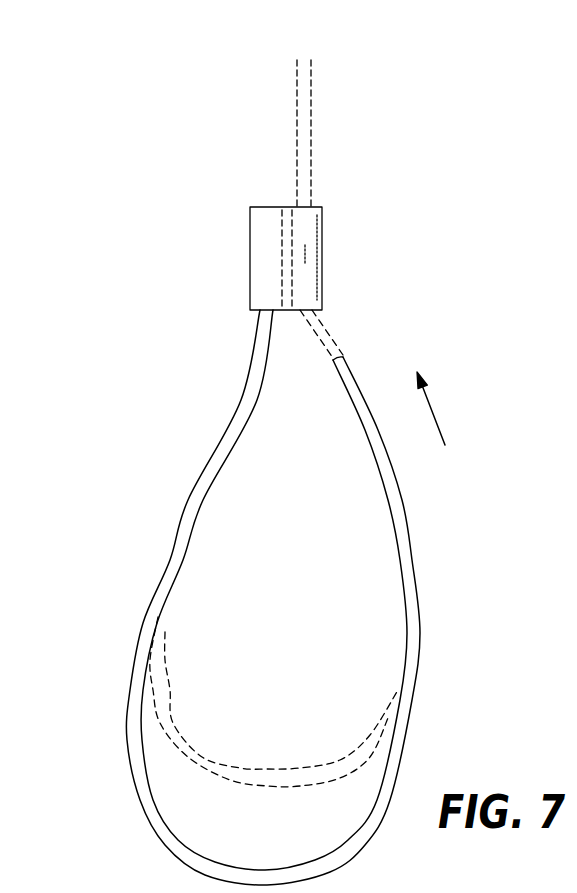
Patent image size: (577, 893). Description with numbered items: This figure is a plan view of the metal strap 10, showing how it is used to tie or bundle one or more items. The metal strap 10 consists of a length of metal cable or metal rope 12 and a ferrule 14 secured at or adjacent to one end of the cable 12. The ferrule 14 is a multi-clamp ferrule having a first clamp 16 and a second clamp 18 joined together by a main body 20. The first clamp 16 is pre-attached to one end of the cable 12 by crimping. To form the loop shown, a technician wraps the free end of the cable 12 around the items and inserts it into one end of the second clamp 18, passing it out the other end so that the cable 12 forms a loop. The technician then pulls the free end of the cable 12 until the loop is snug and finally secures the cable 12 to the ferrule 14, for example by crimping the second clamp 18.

The metal strap 10 is at (261, 472).
The metal cable or metal rope 12 is at (138, 623).
The ferrule 14 is at (295, 276).
The first clamp 16 is at (262, 218).
The second clamp 18 is at (333, 225).
The main body 20 is at (285, 303).